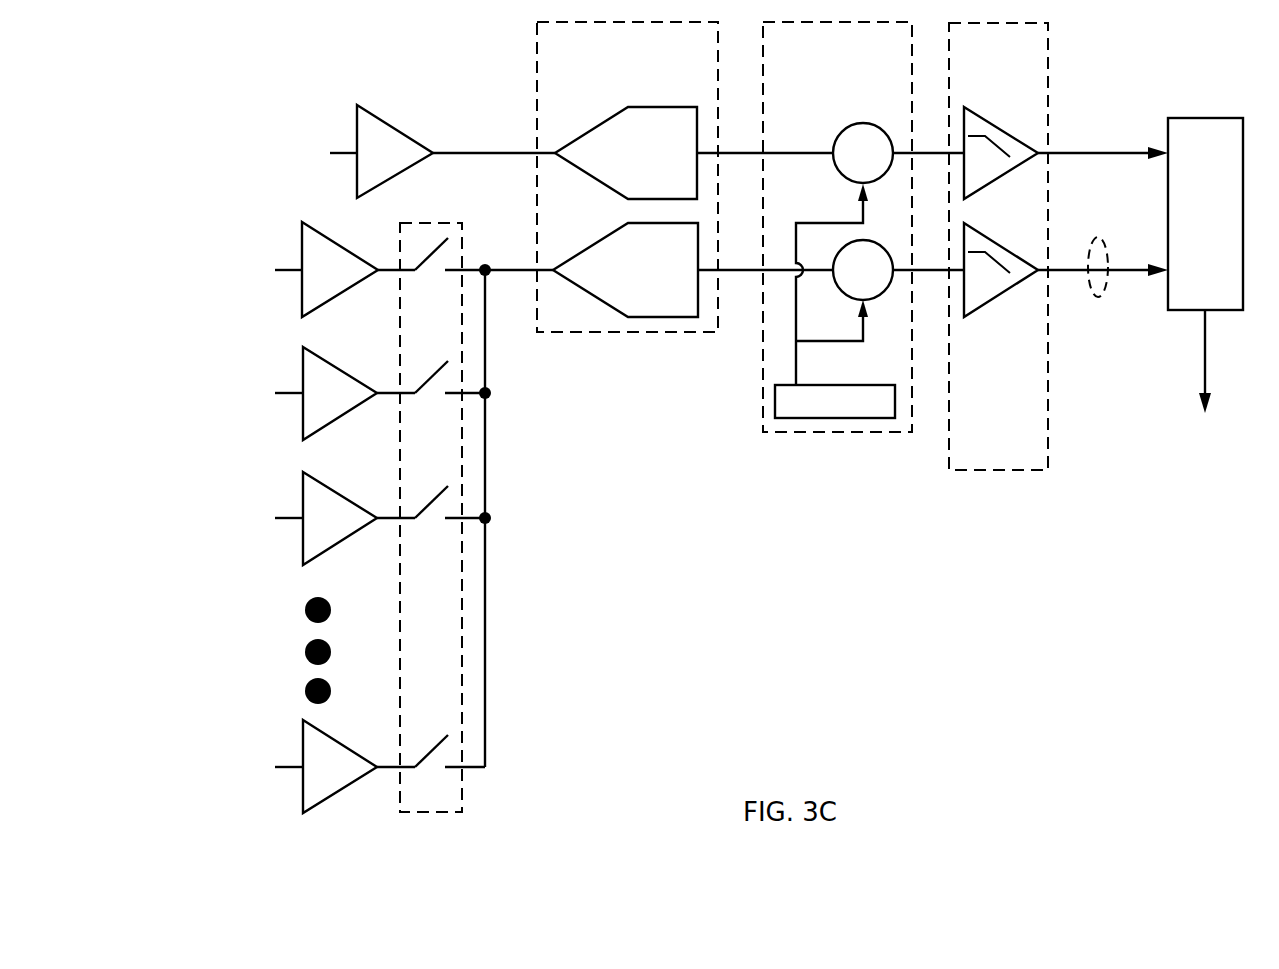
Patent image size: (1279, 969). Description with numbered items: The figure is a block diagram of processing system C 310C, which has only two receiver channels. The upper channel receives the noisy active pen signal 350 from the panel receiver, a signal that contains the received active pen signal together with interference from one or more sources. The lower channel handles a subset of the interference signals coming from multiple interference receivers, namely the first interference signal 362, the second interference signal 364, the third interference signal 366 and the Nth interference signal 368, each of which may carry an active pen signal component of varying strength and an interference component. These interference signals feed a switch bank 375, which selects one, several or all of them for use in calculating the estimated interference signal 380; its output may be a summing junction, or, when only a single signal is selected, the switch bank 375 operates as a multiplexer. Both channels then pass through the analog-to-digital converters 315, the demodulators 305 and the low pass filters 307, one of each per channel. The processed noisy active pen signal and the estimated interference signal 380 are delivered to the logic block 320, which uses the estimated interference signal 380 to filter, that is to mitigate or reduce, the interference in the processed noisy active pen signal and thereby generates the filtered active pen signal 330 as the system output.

The noisy active pen signal 350 is at (397, 151).
The interference signal 1 362 is at (293, 269).
The interference signal 2 364 is at (293, 393).
The interference signal 3 366 is at (293, 518).
The interference signal N 368 is at (293, 766).
The switch bank 375 is at (443, 797).
The analog-to-digital converters 315 is at (618, 101).
The demodulators 305 is at (823, 88).
The low pass filters 307 is at (984, 101).
The logic block 320 is at (1194, 248).
The estimated interference signal 380 is at (1102, 295).
The filtered active pen signal 330 is at (1207, 399).
The processing system C 310C is at (903, 624).